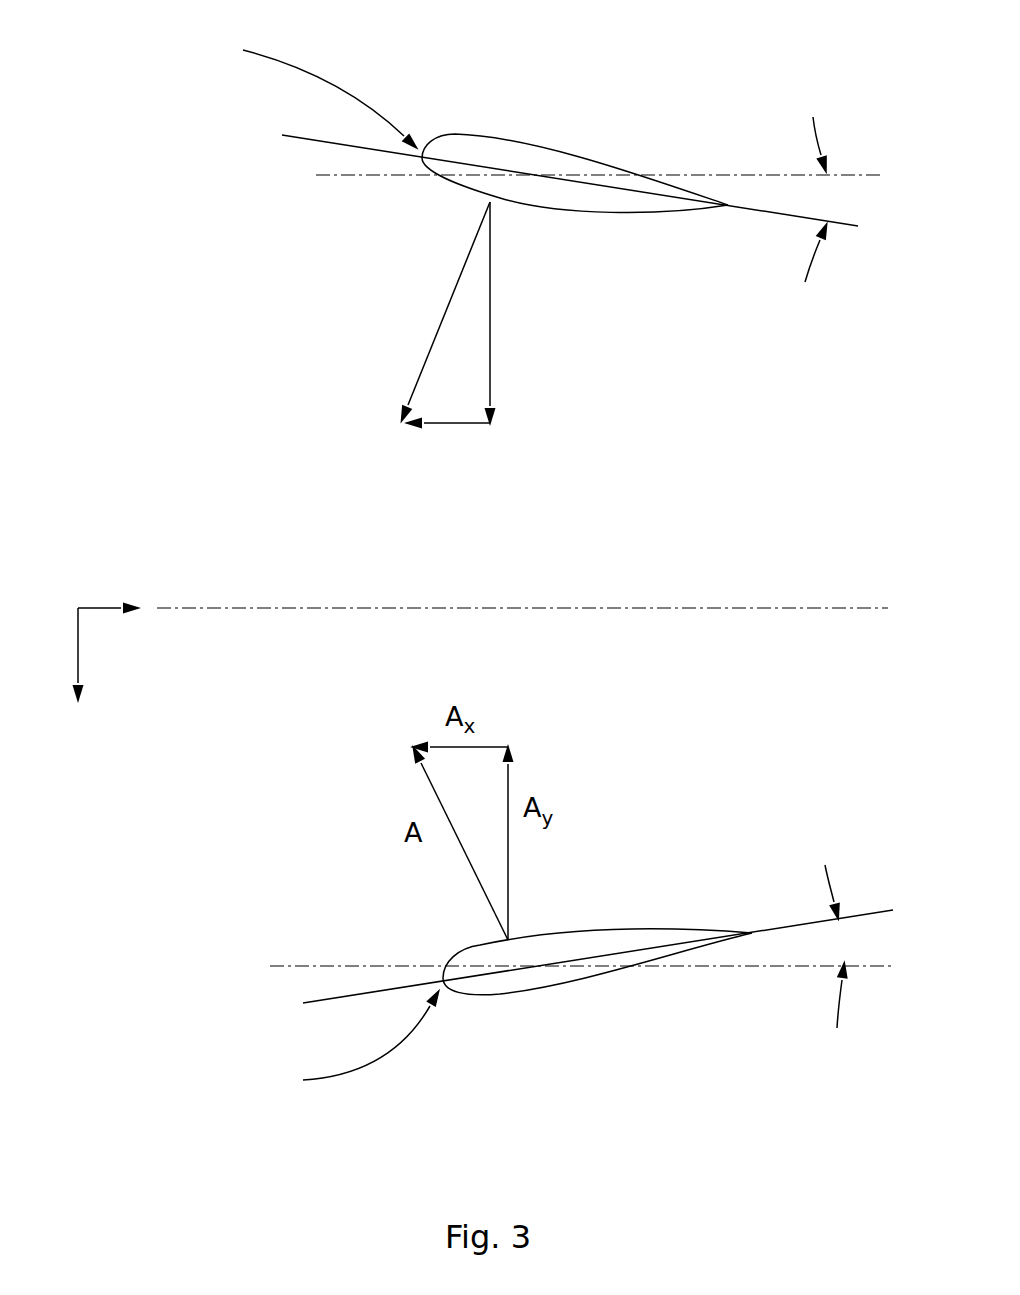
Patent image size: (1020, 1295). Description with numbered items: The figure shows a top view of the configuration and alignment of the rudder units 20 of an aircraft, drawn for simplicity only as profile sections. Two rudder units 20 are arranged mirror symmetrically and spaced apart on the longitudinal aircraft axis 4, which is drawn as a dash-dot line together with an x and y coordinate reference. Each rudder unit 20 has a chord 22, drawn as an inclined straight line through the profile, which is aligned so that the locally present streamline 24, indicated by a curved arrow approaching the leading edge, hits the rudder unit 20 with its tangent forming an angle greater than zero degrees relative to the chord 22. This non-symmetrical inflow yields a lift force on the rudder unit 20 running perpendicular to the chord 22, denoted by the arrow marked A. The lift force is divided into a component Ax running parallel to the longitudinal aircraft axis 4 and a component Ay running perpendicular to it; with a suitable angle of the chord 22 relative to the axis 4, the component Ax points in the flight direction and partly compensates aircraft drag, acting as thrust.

The longitudinal aircraft axis 4 is at (163, 608).
The rudder unit 20 is at (507, 155).
The chord 22 is at (310, 138).
The streamline 24 is at (310, 68).